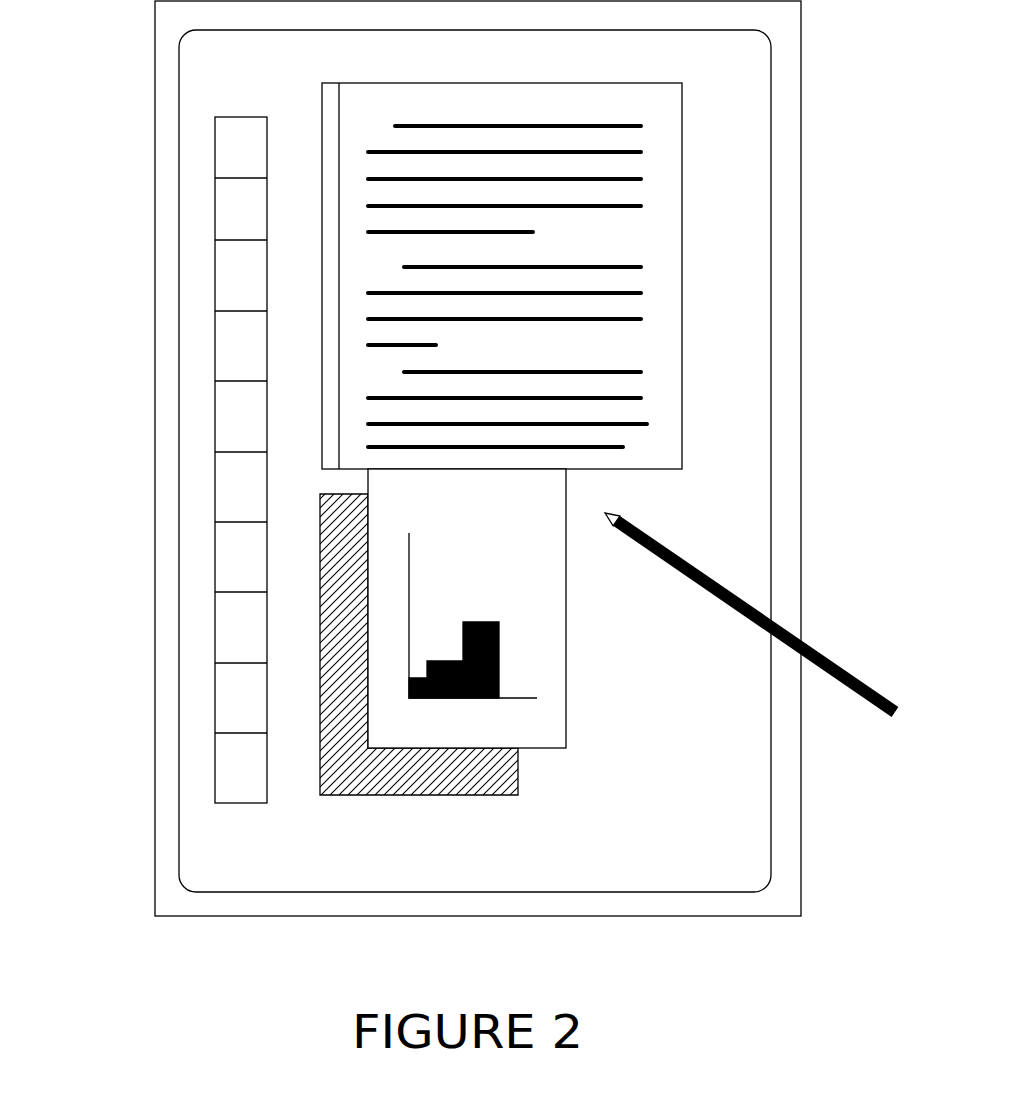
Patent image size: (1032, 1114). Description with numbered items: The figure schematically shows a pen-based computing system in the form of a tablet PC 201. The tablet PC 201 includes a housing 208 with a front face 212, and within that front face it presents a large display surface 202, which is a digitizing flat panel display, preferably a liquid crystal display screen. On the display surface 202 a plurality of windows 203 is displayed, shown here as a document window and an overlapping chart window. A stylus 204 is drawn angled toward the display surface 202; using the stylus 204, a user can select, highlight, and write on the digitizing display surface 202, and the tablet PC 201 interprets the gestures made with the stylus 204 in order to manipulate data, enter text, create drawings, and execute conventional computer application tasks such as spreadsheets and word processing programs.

The tablet PC 201 is at (124, 786).
The display surface 202 is at (178, 520).
The windows 203 is at (348, 801).
The stylus 204 is at (835, 680).
The housing 208 is at (801, 542).
The front face 212 is at (788, 417).